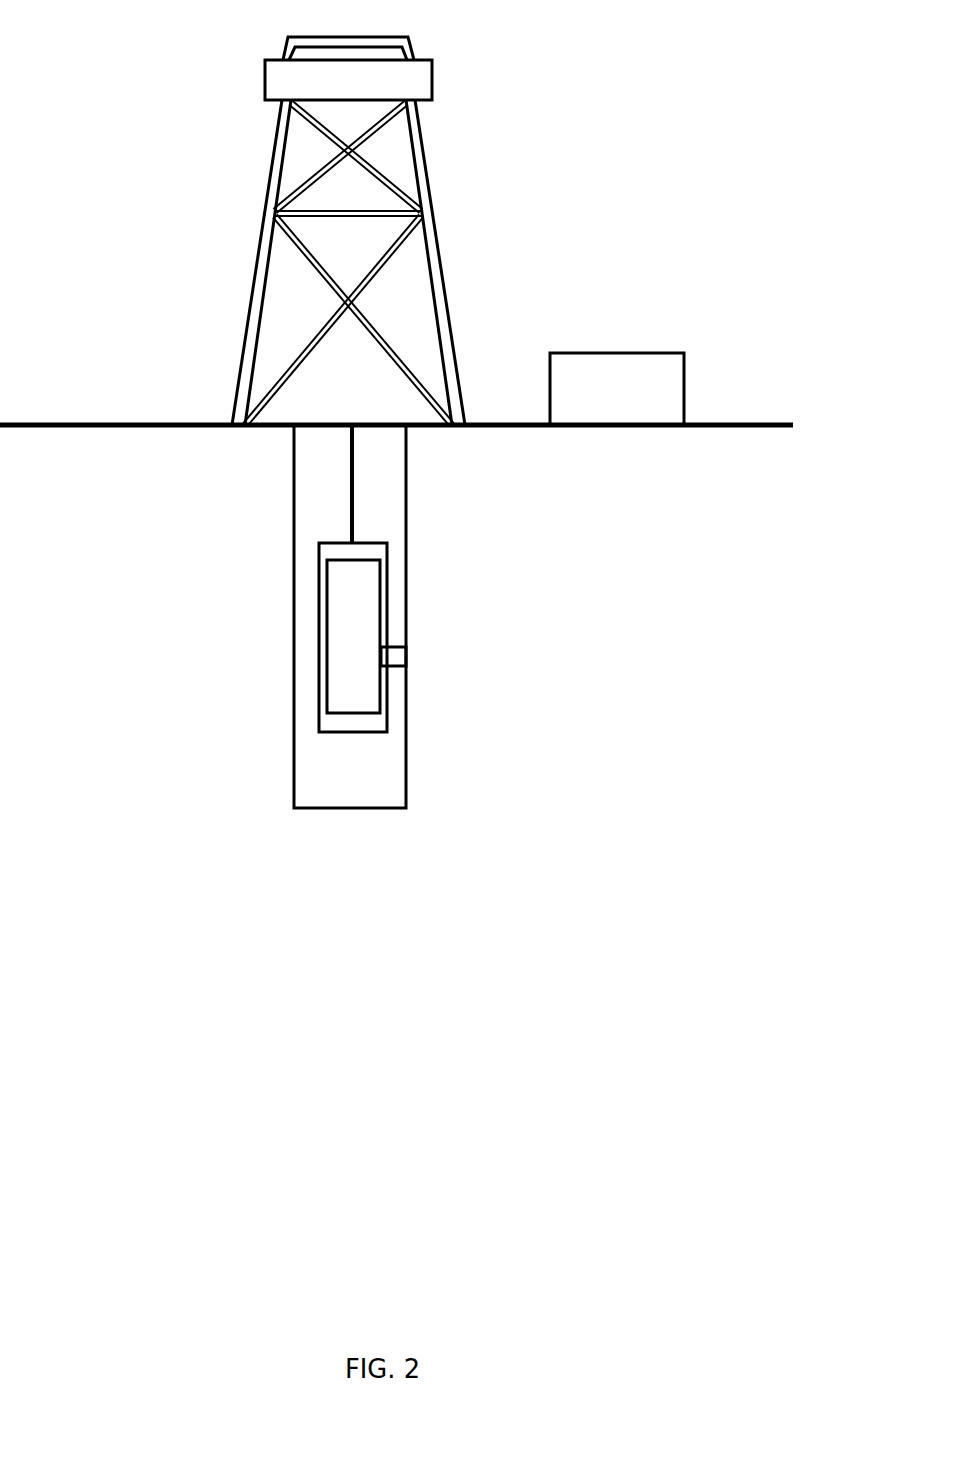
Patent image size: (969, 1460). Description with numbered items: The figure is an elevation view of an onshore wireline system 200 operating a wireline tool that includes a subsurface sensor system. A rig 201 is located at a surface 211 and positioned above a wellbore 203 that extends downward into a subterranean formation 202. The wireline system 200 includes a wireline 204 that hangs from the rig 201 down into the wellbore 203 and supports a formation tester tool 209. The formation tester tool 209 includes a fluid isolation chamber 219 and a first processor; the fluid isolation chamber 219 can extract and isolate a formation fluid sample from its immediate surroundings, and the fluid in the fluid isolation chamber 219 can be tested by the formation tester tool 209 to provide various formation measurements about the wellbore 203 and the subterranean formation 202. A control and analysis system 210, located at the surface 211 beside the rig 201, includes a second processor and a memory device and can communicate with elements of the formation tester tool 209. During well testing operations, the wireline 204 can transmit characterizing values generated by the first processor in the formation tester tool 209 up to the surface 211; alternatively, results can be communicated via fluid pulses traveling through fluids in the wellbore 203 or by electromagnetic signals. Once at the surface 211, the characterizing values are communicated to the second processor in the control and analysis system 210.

The wireline system 200 is at (414, 407).
The rig 201 is at (432, 78).
The subterranean formation 202 is at (604, 588).
The wellbore 203 is at (294, 622).
The wireline 204 is at (355, 477).
The formation tester tool 209 is at (387, 618).
The control and analysis system 210 is at (638, 401).
The surface 211 is at (741, 424).
The fluid isolation chamber 219 is at (398, 657).